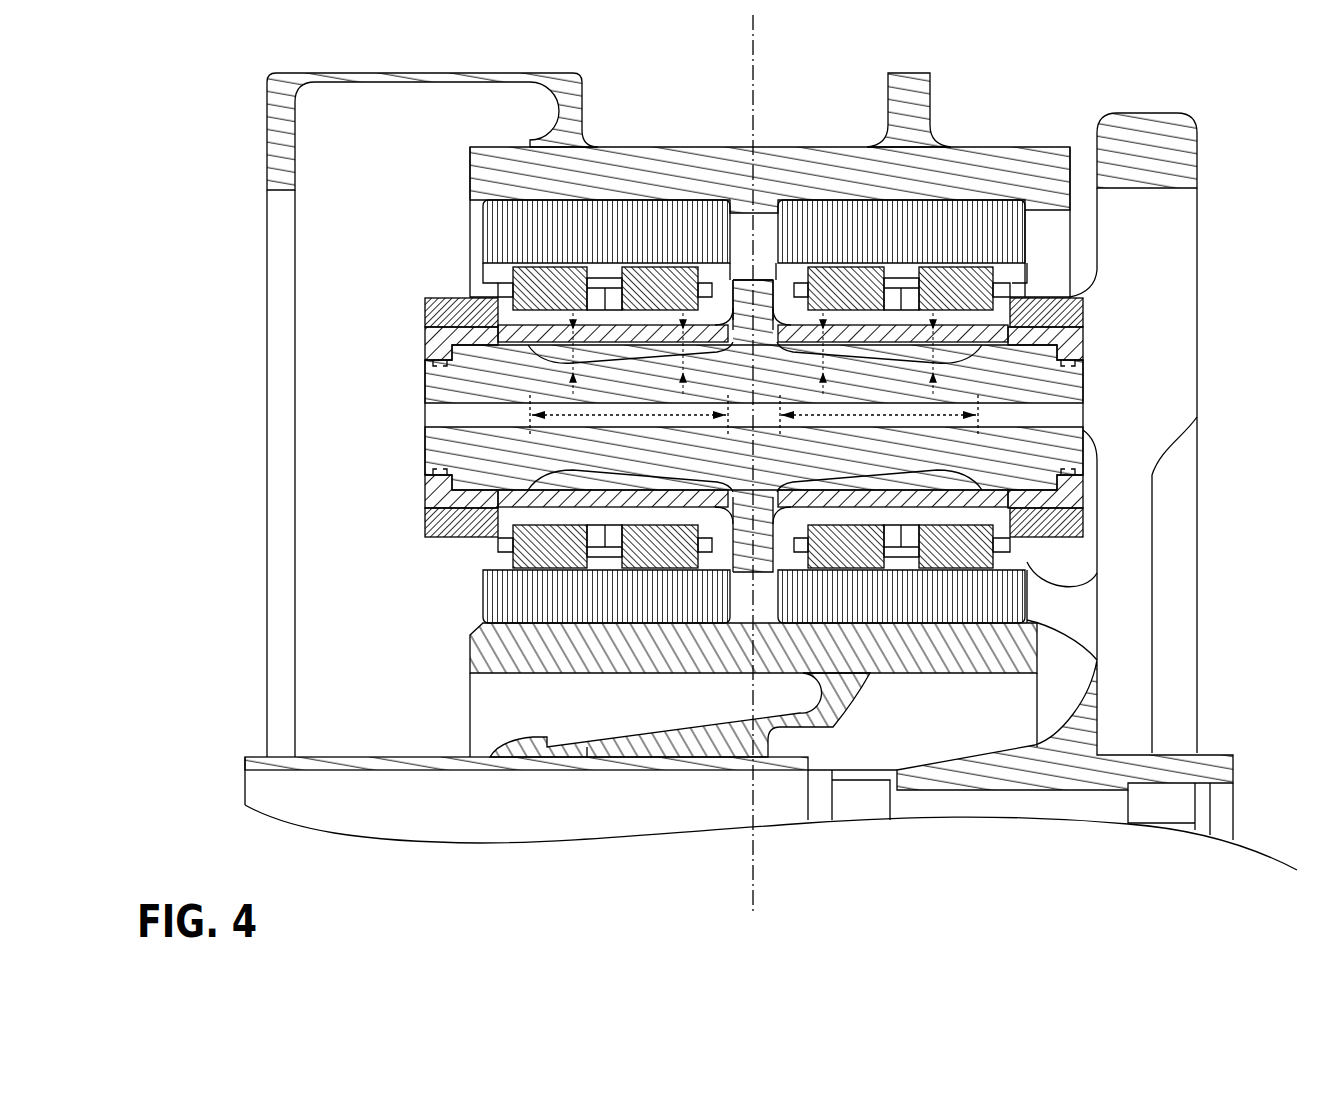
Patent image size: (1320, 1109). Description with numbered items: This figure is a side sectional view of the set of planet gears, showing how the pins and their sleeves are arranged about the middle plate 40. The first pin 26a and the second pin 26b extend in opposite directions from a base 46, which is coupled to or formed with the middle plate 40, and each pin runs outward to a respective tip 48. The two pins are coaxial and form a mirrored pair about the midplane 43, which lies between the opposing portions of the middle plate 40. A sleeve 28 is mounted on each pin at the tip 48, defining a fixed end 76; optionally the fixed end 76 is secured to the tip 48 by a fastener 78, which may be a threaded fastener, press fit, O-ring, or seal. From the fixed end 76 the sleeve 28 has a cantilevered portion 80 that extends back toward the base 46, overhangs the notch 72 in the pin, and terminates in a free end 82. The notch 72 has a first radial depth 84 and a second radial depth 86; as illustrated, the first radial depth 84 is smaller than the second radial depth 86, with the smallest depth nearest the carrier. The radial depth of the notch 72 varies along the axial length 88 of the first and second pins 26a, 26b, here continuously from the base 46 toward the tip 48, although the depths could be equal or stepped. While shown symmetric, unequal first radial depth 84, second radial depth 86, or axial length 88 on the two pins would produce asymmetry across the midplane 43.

The first pin 26a is at (423, 445).
The second pin 26b is at (1085, 437).
The sleeve 28 is at (480, 322).
The middle plate 40 is at (763, 276).
The midplane 43 is at (752, 879).
The base 46 is at (757, 572).
The tip 48 is at (425, 460).
The notch 72 is at (613, 335).
The fixed end 76 is at (425, 342).
The fastener 78 is at (425, 365).
The cantilevered portion 80 is at (560, 337).
The free end 82 is at (704, 290).
The first radial depth 84 is at (683, 330).
The second radial depth 86 is at (565, 358).
The axial length 88 is at (572, 413).